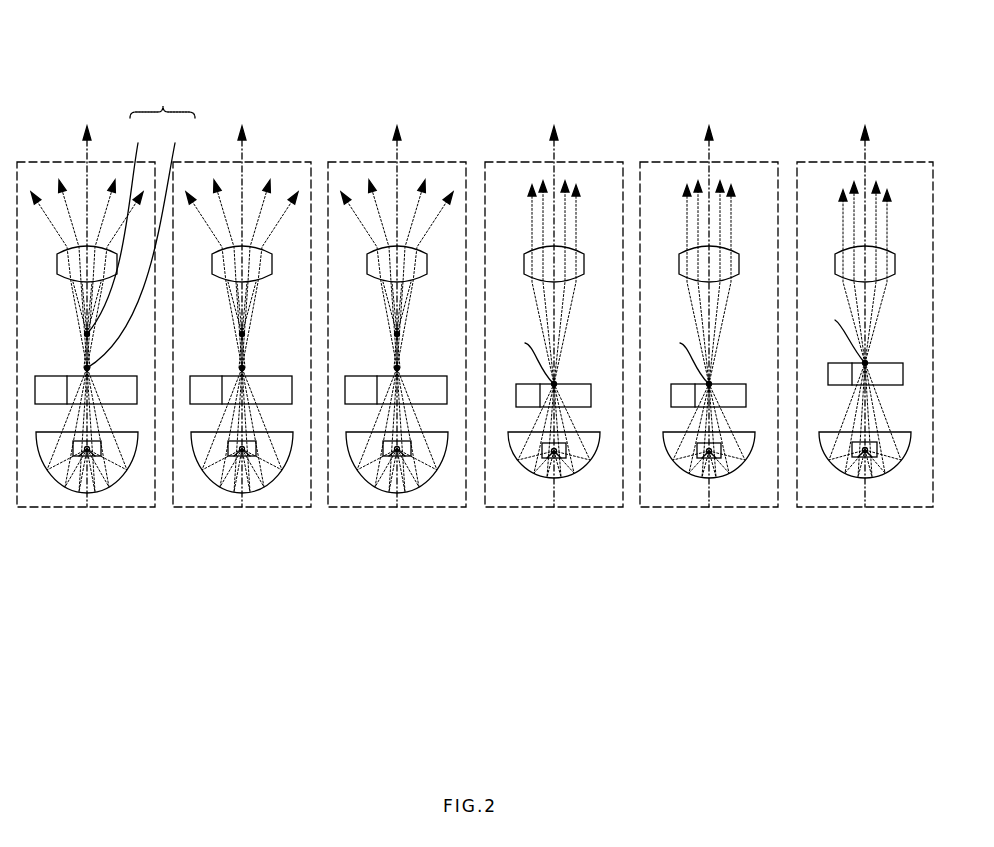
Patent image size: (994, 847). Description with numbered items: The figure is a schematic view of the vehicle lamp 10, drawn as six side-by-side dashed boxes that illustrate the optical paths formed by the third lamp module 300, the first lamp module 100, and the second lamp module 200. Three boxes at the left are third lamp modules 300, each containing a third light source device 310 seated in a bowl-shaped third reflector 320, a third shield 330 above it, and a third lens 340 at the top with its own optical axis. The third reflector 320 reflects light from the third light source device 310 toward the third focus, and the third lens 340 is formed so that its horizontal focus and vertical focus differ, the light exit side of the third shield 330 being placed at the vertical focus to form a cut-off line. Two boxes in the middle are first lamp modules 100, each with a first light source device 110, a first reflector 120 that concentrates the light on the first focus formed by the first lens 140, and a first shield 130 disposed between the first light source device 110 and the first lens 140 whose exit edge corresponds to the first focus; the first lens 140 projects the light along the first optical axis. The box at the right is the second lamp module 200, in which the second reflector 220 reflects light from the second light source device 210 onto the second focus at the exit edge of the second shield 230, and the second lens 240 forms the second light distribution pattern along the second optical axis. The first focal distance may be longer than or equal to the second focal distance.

The vehicle lamp 10 is at (143, 40).
The first lamp module 100 is at (631, 353).
The first light source device 110 is at (733, 426).
The first reflector 120 is at (709, 495).
The first shield 130 is at (721, 369).
The first lens 140 is at (723, 248).
The second lamp module 200 is at (865, 337).
The second light source device 210 is at (886, 426).
The second reflector 220 is at (865, 496).
The second shield 230 is at (879, 347).
The second lens 240 is at (877, 247).
The third lamp module 300 is at (241, 343).
The third light source device 310 is at (60, 505).
The third reflector 320 is at (87, 497).
The third shield 330 is at (86, 355).
The third lens 340 is at (69, 259).